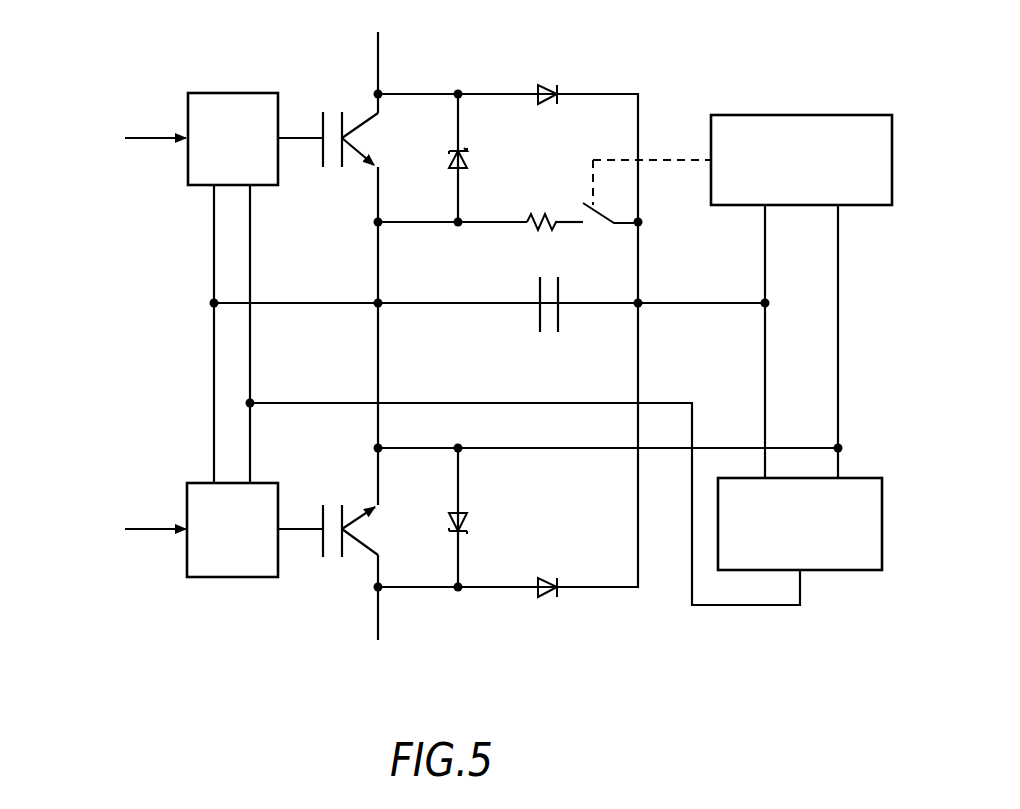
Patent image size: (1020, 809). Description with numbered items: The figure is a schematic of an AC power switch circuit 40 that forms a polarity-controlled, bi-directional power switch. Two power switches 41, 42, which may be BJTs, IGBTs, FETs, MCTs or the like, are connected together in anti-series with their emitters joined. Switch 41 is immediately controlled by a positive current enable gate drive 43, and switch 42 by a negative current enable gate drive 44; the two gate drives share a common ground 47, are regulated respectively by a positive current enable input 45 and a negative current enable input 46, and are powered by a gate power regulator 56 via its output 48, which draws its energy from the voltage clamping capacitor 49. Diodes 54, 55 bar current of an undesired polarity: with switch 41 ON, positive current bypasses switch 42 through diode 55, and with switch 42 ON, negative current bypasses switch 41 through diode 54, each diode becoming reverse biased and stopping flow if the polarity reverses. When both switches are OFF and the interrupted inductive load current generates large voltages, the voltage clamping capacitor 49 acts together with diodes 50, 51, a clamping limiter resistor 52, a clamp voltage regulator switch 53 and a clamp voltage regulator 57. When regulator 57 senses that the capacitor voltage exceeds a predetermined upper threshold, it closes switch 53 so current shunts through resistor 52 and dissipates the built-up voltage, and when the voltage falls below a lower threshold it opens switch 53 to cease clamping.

The AC power switch circuit 40 is at (706, 68).
The power switch 41 is at (366, 118).
The power switch 42 is at (367, 555).
The positive current enable gate drive 43 is at (255, 93).
The negative current enable gate drive 44 is at (230, 580).
The positive current enable input 45 is at (143, 137).
The negative current enable input 46 is at (145, 530).
The common ground 47 is at (330, 302).
The output of gate power regulator 48 is at (250, 365).
The voltage clamping capacitor 49 is at (535, 334).
The diode 50 is at (560, 92).
The diode 51 is at (556, 595).
The clamping limiter resistor 52 is at (528, 232).
The clamp voltage regulator switch 53 is at (598, 218).
The diode 54 is at (447, 166).
The diode 55 is at (450, 520).
The gate power regulator 56 is at (882, 546).
The clamp voltage regulator 57 is at (857, 115).